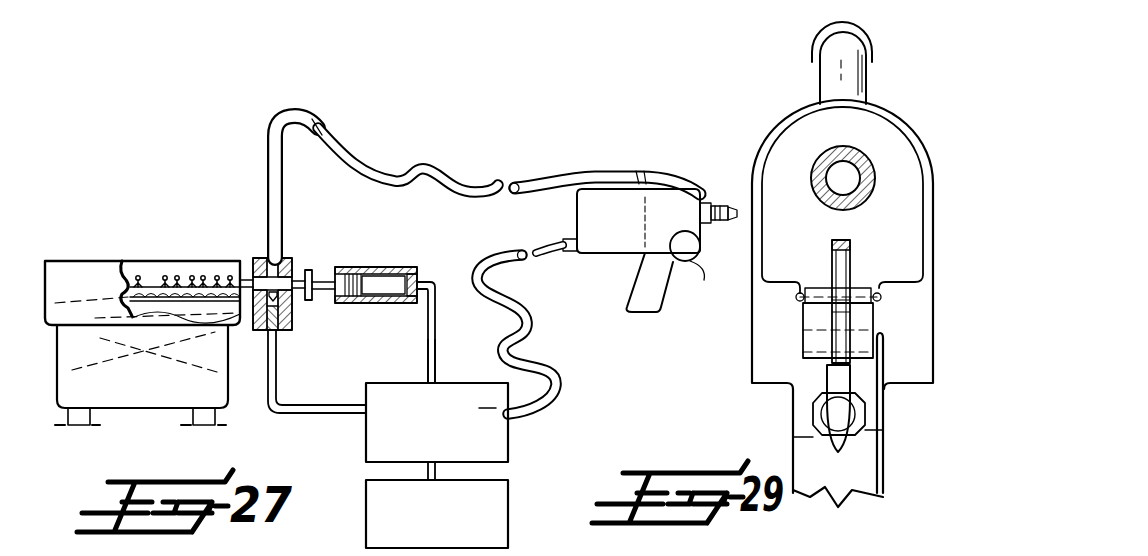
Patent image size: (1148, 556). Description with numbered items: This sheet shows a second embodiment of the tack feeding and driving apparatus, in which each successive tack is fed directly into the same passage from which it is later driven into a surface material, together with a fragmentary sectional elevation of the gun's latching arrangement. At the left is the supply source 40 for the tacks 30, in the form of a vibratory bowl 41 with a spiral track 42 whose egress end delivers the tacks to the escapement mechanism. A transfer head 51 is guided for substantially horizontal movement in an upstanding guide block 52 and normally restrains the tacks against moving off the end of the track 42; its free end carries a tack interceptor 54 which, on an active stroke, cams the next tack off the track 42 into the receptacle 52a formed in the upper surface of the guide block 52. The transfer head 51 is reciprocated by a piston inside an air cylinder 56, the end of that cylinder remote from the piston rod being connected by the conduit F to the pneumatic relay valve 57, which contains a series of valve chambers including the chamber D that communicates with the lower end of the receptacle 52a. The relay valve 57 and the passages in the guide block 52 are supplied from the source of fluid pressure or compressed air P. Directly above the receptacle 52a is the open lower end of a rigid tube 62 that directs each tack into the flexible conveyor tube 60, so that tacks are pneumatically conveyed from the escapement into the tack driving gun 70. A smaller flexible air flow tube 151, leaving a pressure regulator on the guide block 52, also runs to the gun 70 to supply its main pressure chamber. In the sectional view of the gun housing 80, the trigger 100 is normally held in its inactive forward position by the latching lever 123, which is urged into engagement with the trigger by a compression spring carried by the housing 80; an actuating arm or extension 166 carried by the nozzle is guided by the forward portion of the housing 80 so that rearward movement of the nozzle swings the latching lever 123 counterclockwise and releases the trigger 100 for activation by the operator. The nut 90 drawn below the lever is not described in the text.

In FIG. 27, the supply source 40 is at (92, 250).
In FIG. 27, the vibratory bowl 41 is at (160, 403).
In FIG. 27, the spiral track 42 is at (176, 300).
In FIG. 27, the tacks 30 is at (158, 280).
In FIG. 27, the tack interceptor 54 is at (230, 278).
In FIG. 27, the guide block 52 is at (260, 270).
In FIG. 27, the receptacle 52a is at (280, 300).
In FIG. 27, the transfer head 51 is at (303, 270).
In FIG. 27, the air cylinder 56 is at (380, 267).
In FIG. 27, the rigid tube 62 is at (284, 178).
In FIG. 27, the flexible conveyor tube 60 is at (540, 182).
In FIG. 29, the flexible conveyor tube 60 is at (818, 42).
In FIG. 27, the tack driving gun 70 is at (668, 172).
In FIG. 29, the tack driving gun 70 is at (887, 92).
In FIG. 27, the gun housing 80 is at (618, 205).
In FIG. 29, the gun housing 80 is at (786, 120).
In FIG. 27, the air flow tube 151 is at (513, 336).
In FIG. 27, the pneumatic relay valve 57 is at (506, 455).
In FIG. 27, the conduit F is at (435, 352).
In FIG. 27, the valve chamber D is at (275, 372).
In FIG. 27, the source of fluid pressure P is at (366, 522).
In FIG. 29, the actuating arm 166 is at (852, 248).
In FIG. 29, the latching lever 123 is at (854, 270).
In FIG. 29, the nut 90 is at (812, 426).
In FIG. 29, the trigger 100 is at (842, 432).